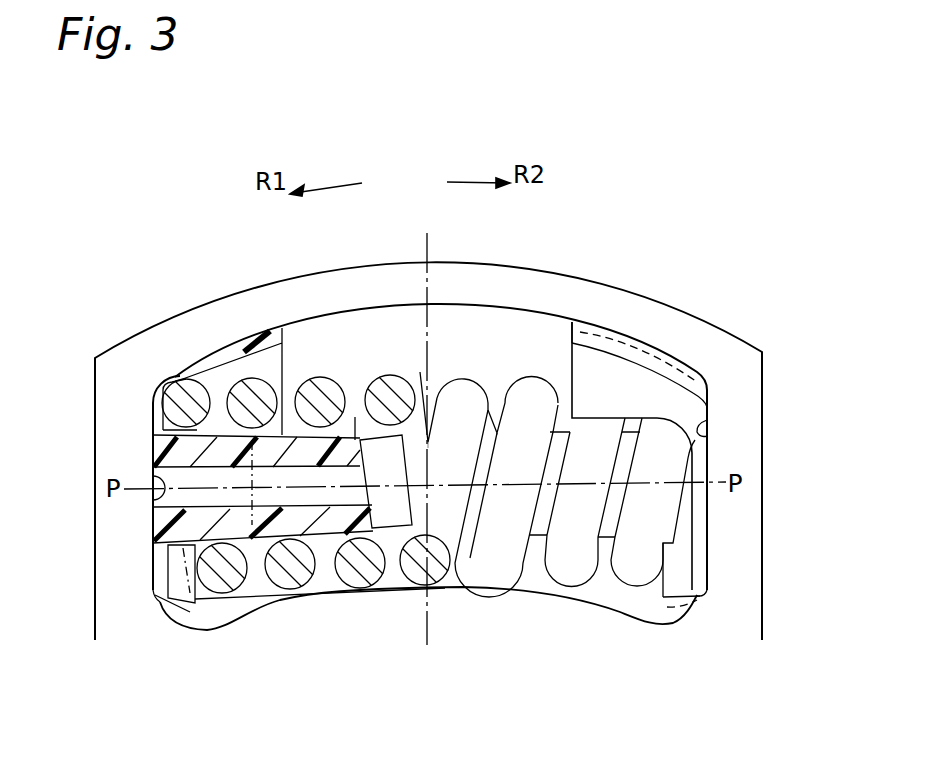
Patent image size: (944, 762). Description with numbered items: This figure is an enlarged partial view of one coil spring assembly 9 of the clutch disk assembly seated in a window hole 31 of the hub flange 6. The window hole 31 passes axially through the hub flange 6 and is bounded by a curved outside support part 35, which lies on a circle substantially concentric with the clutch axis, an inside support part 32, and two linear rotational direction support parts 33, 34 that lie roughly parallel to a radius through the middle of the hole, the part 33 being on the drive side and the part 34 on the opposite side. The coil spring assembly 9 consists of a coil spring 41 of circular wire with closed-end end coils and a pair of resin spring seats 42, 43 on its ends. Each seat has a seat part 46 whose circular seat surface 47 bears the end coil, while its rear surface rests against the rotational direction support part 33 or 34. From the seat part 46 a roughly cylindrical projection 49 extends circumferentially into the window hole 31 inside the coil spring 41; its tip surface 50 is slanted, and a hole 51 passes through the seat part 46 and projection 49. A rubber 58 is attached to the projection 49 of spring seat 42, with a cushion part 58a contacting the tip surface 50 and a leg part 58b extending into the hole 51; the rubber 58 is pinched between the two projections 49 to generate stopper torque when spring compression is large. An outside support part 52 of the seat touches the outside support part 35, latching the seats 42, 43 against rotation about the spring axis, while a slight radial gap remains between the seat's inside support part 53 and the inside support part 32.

The hub flange 6 is at (675, 330).
The coil spring assembly 9 is at (397, 350).
The window hole 31 is at (511, 336).
The inside support part 32 is at (593, 598).
The rotational direction support part 33 is at (153, 468).
The rotational direction support part 34 is at (706, 413).
The outside support part 35 is at (359, 310).
The coil spring 41 is at (458, 400).
The spring seat 42 is at (201, 345).
The spring seat 43 is at (611, 326).
The seat part 46 is at (152, 404).
The seat surface 47 is at (181, 378).
The projection 49 is at (325, 450).
The tip surface 50 is at (383, 472).
The hole 51 is at (157, 547).
The outside support part 52 is at (612, 389).
The inside support part 53 is at (685, 573).
The rubber 58 is at (416, 502).
The cushion part 58a is at (427, 594).
The leg part 58b is at (308, 502).